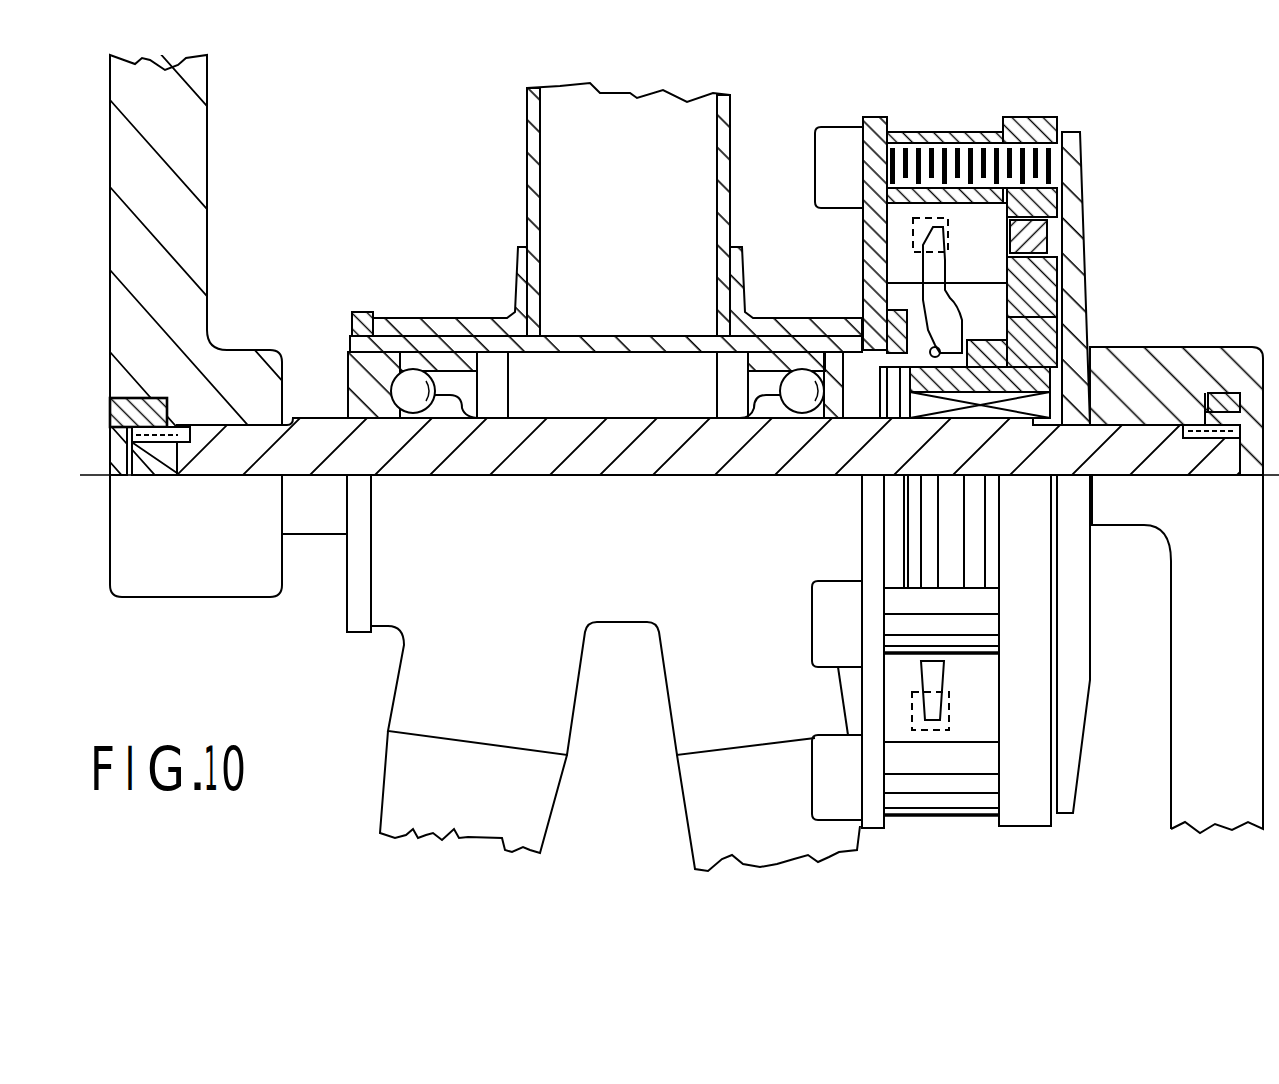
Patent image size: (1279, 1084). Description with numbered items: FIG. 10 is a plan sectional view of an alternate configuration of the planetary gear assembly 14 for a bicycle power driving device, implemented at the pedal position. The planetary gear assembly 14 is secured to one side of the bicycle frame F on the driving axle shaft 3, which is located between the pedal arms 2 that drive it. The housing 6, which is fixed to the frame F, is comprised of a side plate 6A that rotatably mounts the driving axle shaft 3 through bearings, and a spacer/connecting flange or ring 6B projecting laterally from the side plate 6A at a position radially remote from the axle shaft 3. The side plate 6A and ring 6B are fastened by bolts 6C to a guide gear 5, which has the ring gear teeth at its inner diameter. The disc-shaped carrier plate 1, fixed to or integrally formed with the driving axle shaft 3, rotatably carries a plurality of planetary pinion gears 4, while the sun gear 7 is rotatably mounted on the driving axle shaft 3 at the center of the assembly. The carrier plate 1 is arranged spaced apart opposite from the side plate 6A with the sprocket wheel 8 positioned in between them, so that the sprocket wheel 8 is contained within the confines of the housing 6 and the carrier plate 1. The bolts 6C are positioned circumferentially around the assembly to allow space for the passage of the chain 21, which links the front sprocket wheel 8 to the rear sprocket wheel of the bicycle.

The carrier plate 1 is at (1076, 328).
The pedal arms 2 is at (193, 167).
The driving axle shaft 3 is at (546, 432).
The planetary pinion gears 4 is at (1043, 240).
The guide gear 5 is at (1020, 130).
The housing 6 is at (838, 500).
The side plate 6A is at (872, 248).
The spacer/connecting flange or ring 6B is at (975, 105).
The bolts 6C is at (835, 130).
The sun gear 7 is at (1027, 380).
The sprocket wheel 8 is at (938, 238).
The planetary gear assembly 14 is at (926, 842).
The chain 21 is at (949, 724).
The bicycle frame F is at (471, 604).